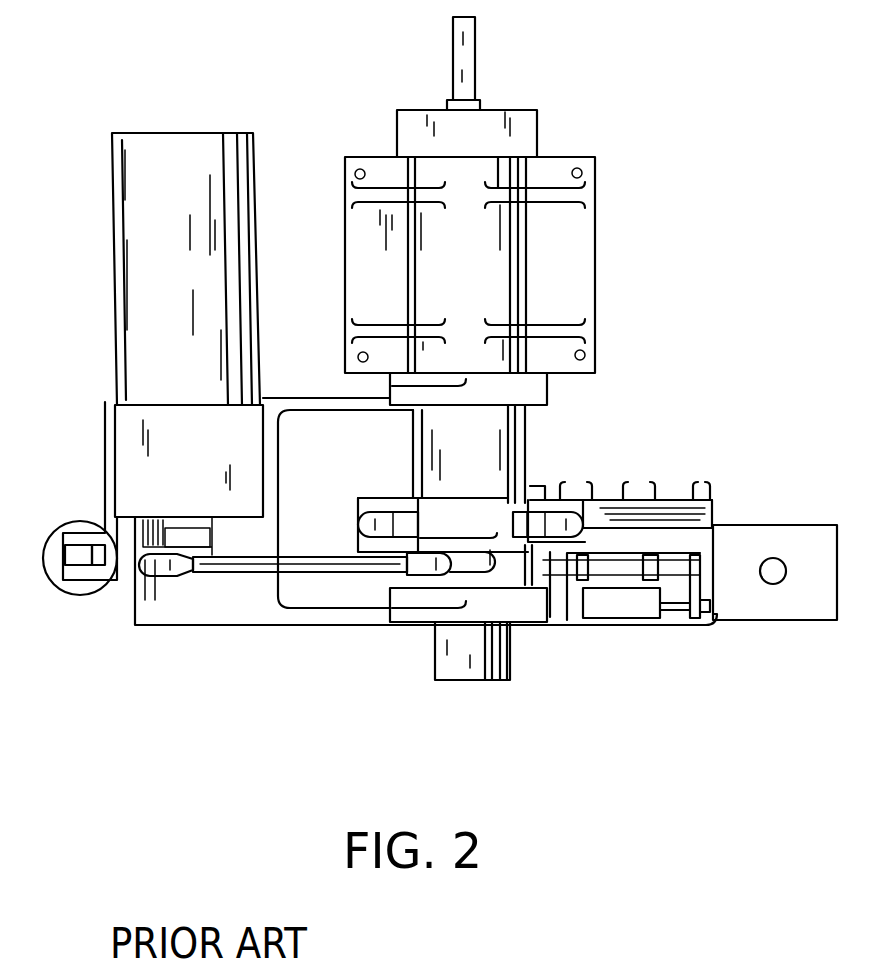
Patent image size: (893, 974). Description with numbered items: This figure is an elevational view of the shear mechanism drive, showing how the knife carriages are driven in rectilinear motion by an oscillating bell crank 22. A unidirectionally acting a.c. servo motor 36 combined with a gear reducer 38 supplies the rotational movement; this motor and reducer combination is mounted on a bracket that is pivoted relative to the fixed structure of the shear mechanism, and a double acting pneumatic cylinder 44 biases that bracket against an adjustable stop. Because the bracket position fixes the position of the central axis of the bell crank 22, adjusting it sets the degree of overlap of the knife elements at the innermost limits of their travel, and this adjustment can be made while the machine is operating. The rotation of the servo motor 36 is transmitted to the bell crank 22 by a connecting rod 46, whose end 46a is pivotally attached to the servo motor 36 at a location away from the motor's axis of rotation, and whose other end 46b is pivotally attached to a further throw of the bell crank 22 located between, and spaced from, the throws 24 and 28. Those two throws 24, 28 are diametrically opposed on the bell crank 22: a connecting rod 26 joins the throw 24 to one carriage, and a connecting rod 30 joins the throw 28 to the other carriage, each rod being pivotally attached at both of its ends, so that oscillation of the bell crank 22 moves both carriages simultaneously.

The bell crank 22 is at (480, 513).
The throw 24 is at (358, 502).
The connecting rod 26 is at (353, 527).
The throw 28 is at (566, 505).
The connecting rod 30 is at (590, 520).
The a.c. servo motor 36 is at (140, 458).
The gear reducer 38 is at (145, 308).
The double acting pneumatic cylinder 44 is at (78, 582).
The connecting rod 46 is at (235, 570).
The end of connecting rod 46a is at (175, 566).
The end of connecting rod 46b is at (415, 567).